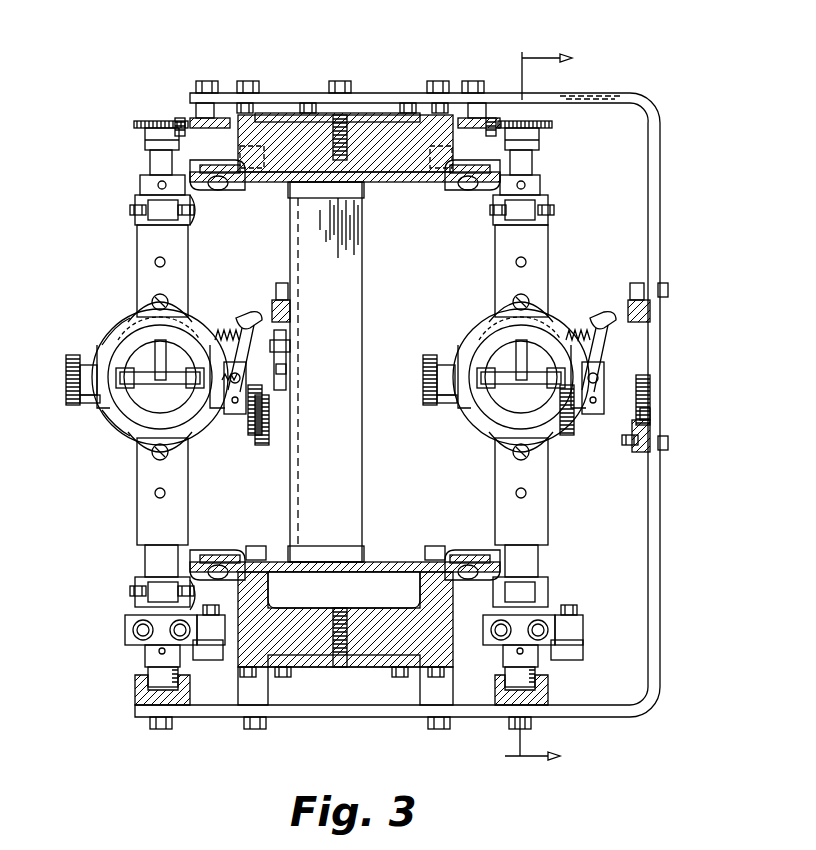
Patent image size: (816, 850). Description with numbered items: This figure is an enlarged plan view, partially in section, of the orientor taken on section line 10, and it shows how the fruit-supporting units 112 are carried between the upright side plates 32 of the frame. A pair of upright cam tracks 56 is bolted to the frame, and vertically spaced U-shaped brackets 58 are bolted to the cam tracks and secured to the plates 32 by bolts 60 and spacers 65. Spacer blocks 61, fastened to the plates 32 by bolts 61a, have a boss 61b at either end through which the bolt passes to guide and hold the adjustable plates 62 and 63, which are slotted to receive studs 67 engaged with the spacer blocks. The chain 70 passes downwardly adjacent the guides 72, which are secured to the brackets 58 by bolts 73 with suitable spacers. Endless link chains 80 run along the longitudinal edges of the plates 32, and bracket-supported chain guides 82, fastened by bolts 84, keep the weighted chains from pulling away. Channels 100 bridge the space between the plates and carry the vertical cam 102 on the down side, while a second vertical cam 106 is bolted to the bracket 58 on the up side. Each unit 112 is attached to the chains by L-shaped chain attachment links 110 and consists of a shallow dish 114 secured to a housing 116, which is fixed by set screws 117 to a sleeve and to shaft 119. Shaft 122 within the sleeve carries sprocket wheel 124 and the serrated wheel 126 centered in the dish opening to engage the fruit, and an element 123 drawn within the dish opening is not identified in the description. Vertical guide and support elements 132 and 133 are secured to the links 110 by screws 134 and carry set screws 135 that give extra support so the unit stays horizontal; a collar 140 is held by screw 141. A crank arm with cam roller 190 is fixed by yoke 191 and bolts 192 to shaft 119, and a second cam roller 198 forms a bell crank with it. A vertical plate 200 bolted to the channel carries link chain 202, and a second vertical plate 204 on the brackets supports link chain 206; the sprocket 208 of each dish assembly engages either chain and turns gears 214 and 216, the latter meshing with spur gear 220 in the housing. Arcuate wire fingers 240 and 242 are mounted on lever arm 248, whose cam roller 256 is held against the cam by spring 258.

The section line 10 is at (525, 407).
The upright side plate 32 is at (378, 182).
The cam track 56 is at (138, 705).
The U-shaped bracket 58 is at (600, 100).
The bolt 60 is at (436, 81).
The spacer block 61 is at (312, 170).
The bolt 61a is at (262, 88).
The boss 61b is at (243, 88).
The plate 62 is at (372, 667).
The plate 63 is at (370, 113).
The spacer 65 is at (428, 690).
The stud 67 is at (340, 81).
The chain 70 is at (176, 120).
The guide 72 is at (200, 118).
The bolt 73 is at (207, 81).
The endless link chain 80 is at (240, 180).
The chain guide 82 is at (200, 192).
The bolt 84 is at (240, 148).
The channel 100 is at (340, 448).
The vertical cam 102 is at (280, 300).
The vertical cam 106 is at (640, 322).
The chain attachment link 110 is at (222, 187).
The fruit-supporting unit 112 is at (98, 458).
The dish 114 is at (110, 415).
The housing 116 is at (188, 256).
The set screw 117 is at (155, 262).
The shaft 119 is at (150, 558).
The shaft 122 is at (150, 158).
The stem 123 is at (166, 356).
The sprocket wheel 124 is at (134, 123).
The serrated wheel 126 is at (158, 384).
The vertical guide and support element 132 is at (160, 212).
The vertical guide and support element 133 is at (160, 590).
The screw 134 is at (196, 212).
The set screw 135 is at (130, 212).
The collar 140 is at (140, 185).
The screw 141 is at (525, 185).
The cam roller 190 is at (148, 677).
The yoke 191 is at (155, 647).
The bolt 192 is at (134, 630).
The cam roller 198 is at (206, 660).
The vertical plate 200 is at (286, 338).
The link chain 202 is at (288, 370).
The vertical plate 204 is at (640, 452).
The link chain 206 is at (650, 414).
The sprocket 208 is at (262, 420).
The gear 214 is at (250, 430).
The gear 216 is at (74, 410).
The spur gear 220 is at (70, 352).
The arcuate wire finger 240 is at (130, 320).
The arcuate wire finger 242 is at (112, 440).
The lever arm 248 is at (246, 362).
The cam roller 256 is at (246, 312).
The spring 258 is at (226, 330).